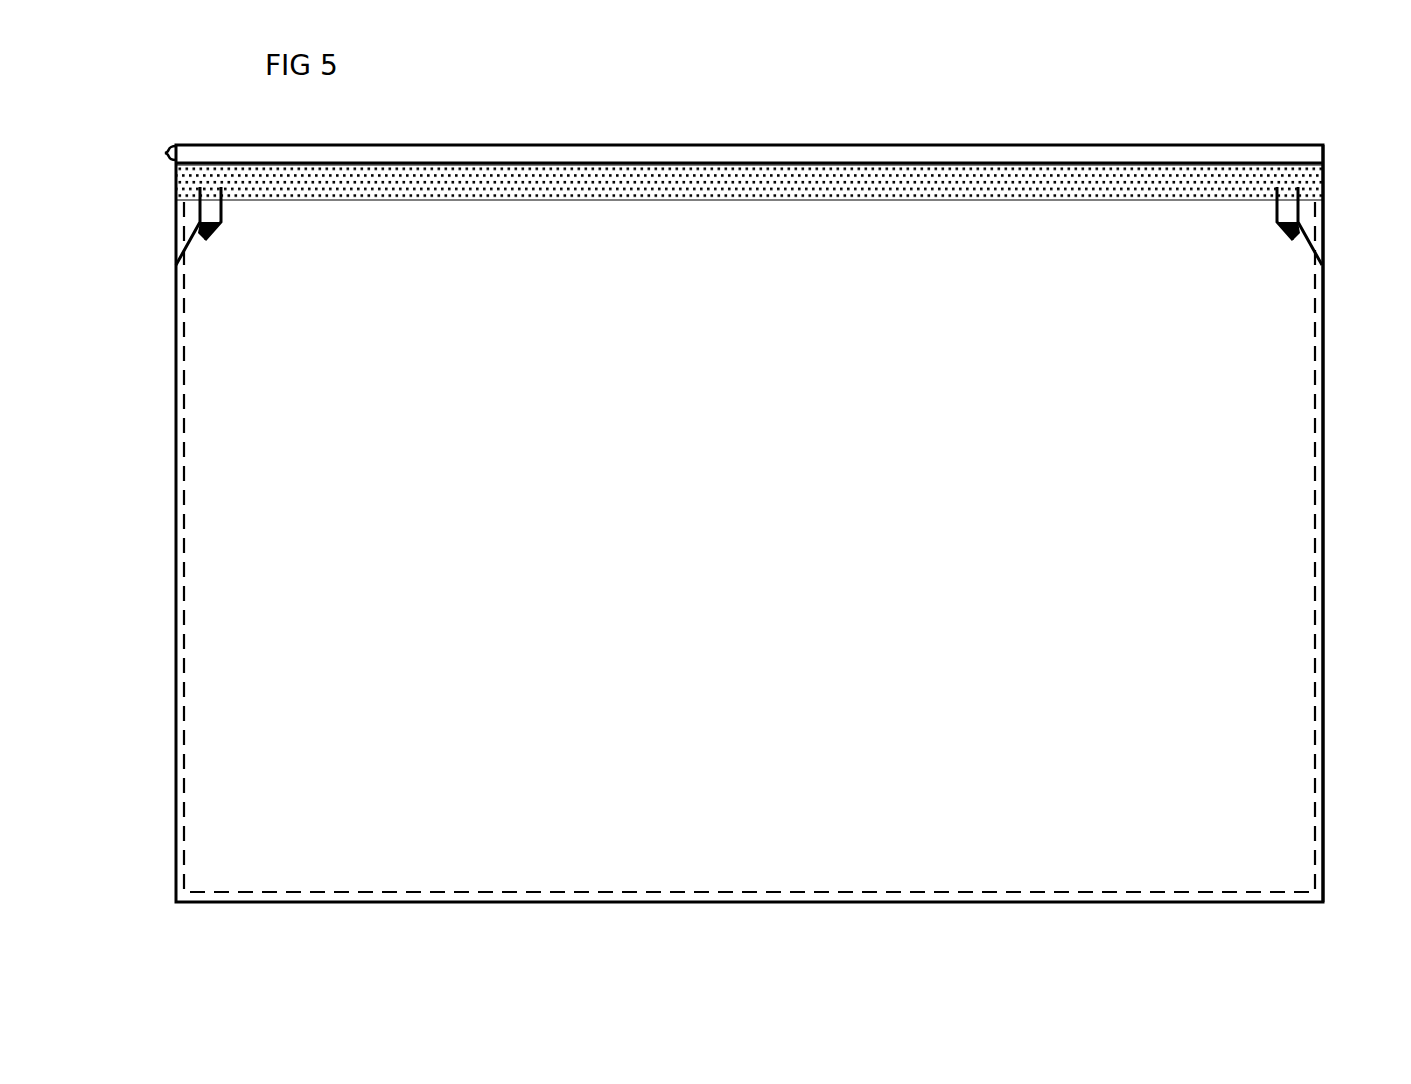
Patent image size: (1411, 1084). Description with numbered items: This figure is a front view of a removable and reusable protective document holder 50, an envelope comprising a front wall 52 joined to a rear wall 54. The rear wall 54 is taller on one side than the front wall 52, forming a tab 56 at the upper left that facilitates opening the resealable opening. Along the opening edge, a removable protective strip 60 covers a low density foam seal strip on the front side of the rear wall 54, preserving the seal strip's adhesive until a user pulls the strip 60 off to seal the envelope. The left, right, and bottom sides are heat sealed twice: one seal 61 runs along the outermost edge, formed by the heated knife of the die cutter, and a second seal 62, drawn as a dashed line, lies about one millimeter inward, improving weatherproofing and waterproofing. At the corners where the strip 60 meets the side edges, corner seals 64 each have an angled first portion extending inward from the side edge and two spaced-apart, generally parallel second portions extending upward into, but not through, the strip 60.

The protective document holder 50 is at (1180, 93).
The front wall 52 is at (250, 668).
The rear wall 54 is at (1287, 152).
The tab 56 is at (165, 148).
The removable protective strip 60 is at (728, 188).
The seal 61 is at (1323, 437).
The seal 62 is at (1315, 578).
The corner seal 64 is at (205, 240).